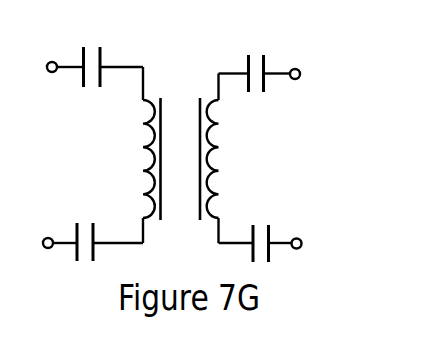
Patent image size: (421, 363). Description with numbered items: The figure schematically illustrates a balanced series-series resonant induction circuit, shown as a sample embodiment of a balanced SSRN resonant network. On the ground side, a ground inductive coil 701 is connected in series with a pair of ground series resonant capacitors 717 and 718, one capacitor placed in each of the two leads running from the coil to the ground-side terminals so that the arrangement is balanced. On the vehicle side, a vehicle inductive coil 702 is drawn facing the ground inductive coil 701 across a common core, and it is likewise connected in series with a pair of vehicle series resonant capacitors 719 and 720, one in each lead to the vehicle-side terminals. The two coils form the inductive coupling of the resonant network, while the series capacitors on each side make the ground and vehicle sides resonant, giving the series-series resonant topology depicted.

The ground inductive coil 701 is at (126, 155).
The vehicle inductive coil 702 is at (241, 159).
The ground series resonant capacitor 717 is at (95, 53).
The ground series resonant capacitor 718 is at (93, 230).
The vehicle series resonant capacitor 719 is at (260, 58).
The vehicle series resonant capacitor 720 is at (260, 230).